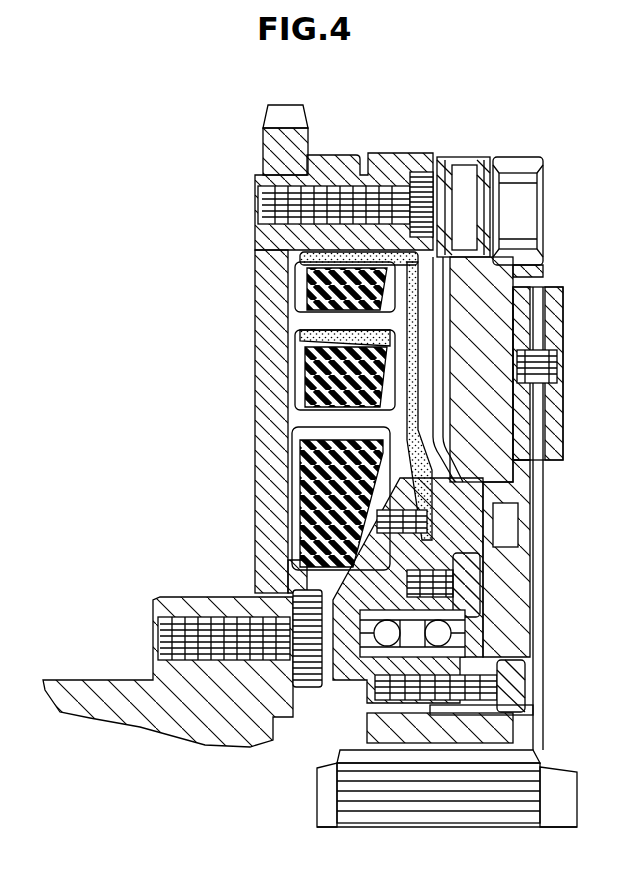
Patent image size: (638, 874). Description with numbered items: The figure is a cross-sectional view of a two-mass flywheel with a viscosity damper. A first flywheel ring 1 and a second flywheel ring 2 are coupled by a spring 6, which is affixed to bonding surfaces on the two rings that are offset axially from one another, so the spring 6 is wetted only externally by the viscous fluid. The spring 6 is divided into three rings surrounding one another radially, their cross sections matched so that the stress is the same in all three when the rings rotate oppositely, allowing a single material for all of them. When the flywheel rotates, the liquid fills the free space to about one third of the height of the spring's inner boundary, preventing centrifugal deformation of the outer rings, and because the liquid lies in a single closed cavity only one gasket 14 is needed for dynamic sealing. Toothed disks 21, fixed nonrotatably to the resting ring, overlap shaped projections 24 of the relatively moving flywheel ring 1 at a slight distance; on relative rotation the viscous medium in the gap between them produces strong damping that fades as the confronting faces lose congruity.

The first flywheel ring 1 is at (410, 152).
The second flywheel ring 2 is at (512, 152).
The spring 6 is at (300, 300).
The toothed disks 21 is at (398, 323).
The projections 24 is at (413, 387).
The gasket 14 is at (407, 570).